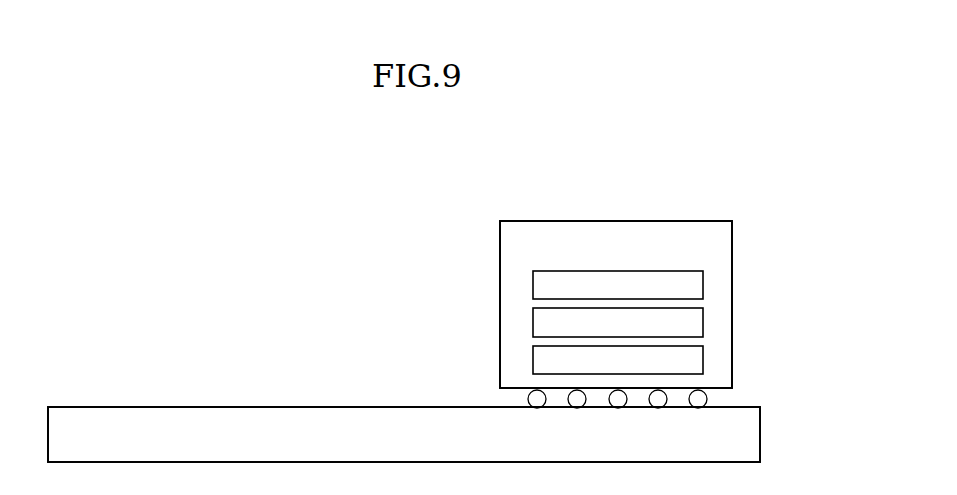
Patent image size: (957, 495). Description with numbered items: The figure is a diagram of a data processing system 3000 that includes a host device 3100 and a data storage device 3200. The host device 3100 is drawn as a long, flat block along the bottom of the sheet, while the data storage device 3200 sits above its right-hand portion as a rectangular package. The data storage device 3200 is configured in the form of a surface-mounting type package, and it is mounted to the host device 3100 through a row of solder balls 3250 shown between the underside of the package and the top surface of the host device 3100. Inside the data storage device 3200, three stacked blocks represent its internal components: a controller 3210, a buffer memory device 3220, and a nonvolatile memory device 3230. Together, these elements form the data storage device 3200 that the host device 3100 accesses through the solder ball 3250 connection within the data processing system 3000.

The data processing system 3000 is at (112, 162).
The host device 3100 is at (404, 434).
The data storage device 3200 is at (616, 304).
The controller 3210 is at (618, 284).
The buffer memory device 3220 is at (618, 322).
The nonvolatile memory device 3230 is at (618, 359).
The solder balls 3250 is at (720, 398).